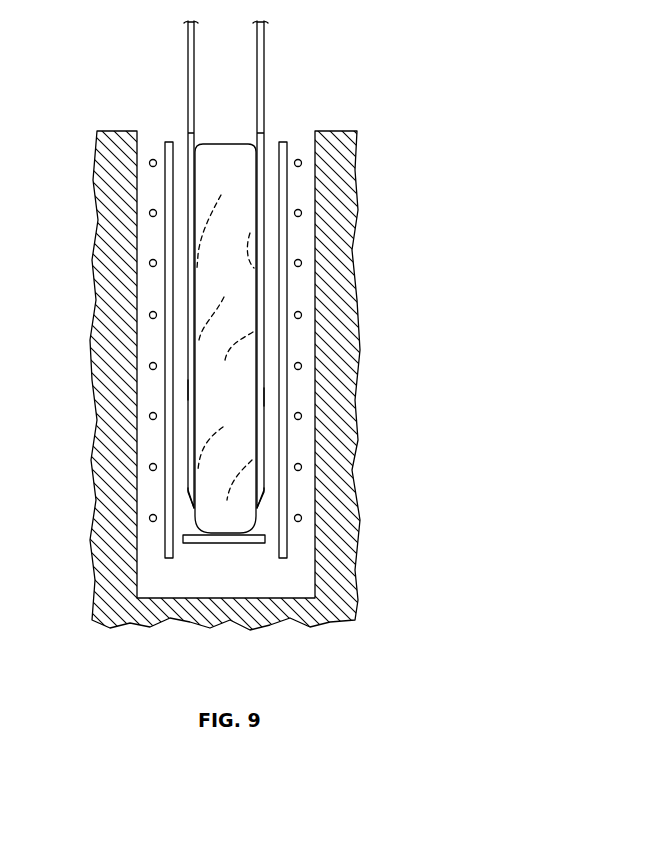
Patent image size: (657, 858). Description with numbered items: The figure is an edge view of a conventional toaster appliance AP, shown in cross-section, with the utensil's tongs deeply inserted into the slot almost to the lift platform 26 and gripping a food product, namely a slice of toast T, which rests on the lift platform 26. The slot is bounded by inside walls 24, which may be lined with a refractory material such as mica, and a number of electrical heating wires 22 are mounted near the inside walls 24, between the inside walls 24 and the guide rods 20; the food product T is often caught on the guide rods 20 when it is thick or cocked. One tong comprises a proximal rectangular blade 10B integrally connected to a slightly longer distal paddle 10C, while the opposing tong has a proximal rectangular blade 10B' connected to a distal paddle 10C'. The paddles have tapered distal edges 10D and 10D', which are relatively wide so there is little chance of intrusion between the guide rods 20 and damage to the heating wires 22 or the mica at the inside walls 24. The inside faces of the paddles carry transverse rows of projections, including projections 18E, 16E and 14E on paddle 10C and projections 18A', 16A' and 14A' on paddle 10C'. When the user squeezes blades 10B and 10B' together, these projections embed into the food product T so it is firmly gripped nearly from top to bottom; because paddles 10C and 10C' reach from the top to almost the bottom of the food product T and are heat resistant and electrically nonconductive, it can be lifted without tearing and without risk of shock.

The proximal rectangular blade 10B is at (297, 262).
The proximal rectangular blade 10B' is at (153, 264).
The distal paddle 10C is at (345, 375).
The distal paddle 10C' is at (102, 417).
The tapered distal edge 10D is at (339, 516).
The tapered distal edge 10D' is at (208, 537).
The projection 14A' is at (221, 434).
The projection 14E is at (229, 492).
The projection 16A' is at (222, 307).
The projection 16E is at (230, 360).
The projection 18A' is at (219, 220).
The projection 18E is at (258, 233).
The guide rods 20 is at (287, 301).
The electrical heating wires 22 is at (302, 213).
The inside walls 24 is at (138, 146).
The lift platform 26 is at (240, 544).
The toaster appliance AP is at (333, 131).
The slice of toast T is at (230, 143).